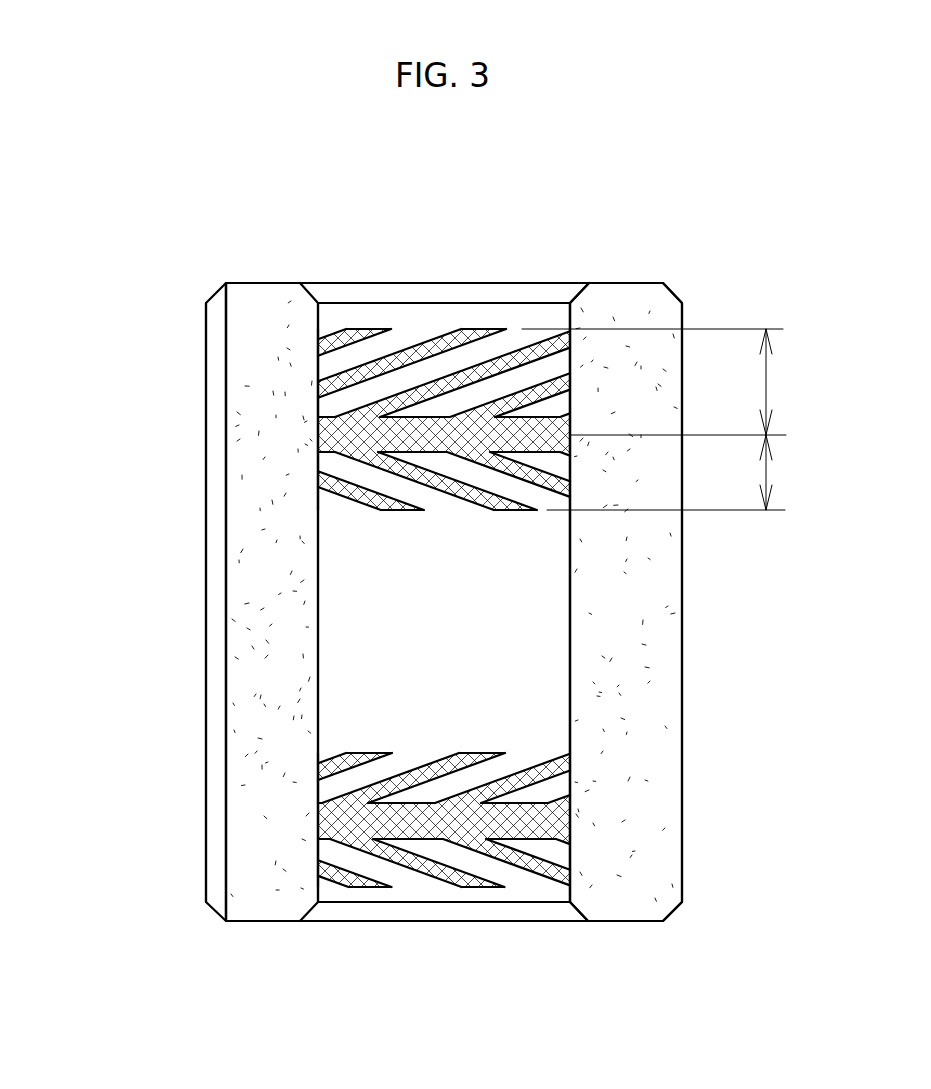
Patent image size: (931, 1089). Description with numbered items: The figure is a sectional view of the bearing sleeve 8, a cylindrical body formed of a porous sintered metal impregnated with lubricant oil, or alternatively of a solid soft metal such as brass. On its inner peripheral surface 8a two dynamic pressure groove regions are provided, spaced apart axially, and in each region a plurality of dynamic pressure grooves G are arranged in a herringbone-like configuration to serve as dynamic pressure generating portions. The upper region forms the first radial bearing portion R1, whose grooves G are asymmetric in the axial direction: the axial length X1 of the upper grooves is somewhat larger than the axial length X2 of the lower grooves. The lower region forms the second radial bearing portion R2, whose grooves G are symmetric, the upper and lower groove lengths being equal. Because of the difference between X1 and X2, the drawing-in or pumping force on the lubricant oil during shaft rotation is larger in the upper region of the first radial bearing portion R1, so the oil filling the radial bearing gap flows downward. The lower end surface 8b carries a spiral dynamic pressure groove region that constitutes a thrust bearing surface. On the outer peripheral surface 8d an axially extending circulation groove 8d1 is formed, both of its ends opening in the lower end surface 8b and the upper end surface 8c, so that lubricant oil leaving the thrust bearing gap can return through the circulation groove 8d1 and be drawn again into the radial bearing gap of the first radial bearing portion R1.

The bearing sleeve 8 is at (165, 308).
The inner peripheral surface 8a is at (570, 600).
The lower end surface 8b is at (625, 922).
The end surface 8c is at (625, 290).
The outer peripheral surface 8d is at (205, 655).
The circulation groove 8d1 is at (225, 568).
The dynamic pressure grooves G is at (384, 343).
The first radial bearing portion R1 is at (318, 410).
The second radial bearing portion R2 is at (318, 828).
The axial length of the upper dynamic pressure grooves X1 is at (669, 382).
The axial length of the lower dynamic pressure grooves X2 is at (682, 472).